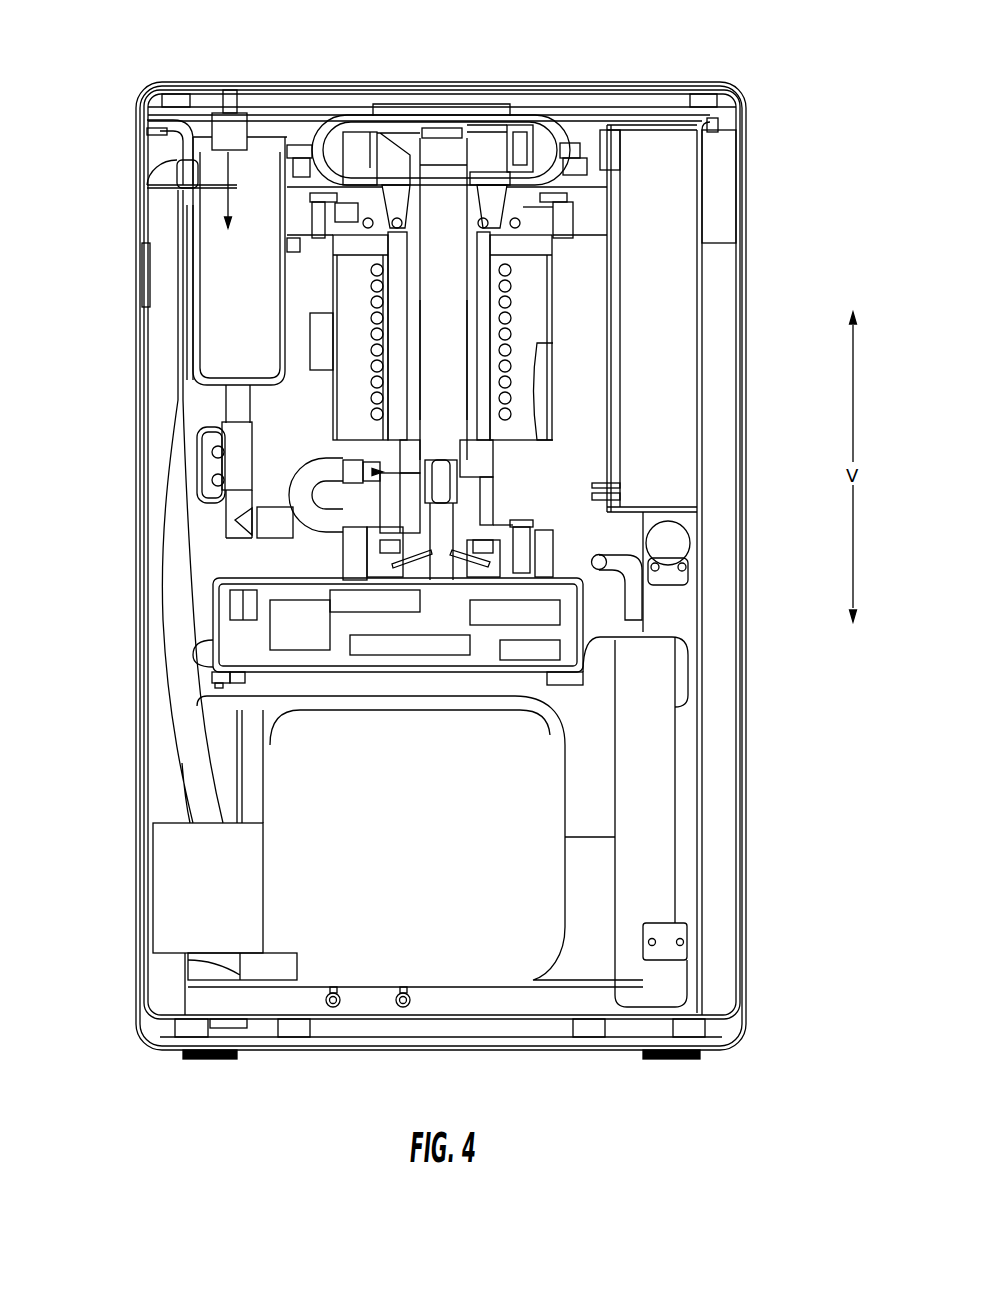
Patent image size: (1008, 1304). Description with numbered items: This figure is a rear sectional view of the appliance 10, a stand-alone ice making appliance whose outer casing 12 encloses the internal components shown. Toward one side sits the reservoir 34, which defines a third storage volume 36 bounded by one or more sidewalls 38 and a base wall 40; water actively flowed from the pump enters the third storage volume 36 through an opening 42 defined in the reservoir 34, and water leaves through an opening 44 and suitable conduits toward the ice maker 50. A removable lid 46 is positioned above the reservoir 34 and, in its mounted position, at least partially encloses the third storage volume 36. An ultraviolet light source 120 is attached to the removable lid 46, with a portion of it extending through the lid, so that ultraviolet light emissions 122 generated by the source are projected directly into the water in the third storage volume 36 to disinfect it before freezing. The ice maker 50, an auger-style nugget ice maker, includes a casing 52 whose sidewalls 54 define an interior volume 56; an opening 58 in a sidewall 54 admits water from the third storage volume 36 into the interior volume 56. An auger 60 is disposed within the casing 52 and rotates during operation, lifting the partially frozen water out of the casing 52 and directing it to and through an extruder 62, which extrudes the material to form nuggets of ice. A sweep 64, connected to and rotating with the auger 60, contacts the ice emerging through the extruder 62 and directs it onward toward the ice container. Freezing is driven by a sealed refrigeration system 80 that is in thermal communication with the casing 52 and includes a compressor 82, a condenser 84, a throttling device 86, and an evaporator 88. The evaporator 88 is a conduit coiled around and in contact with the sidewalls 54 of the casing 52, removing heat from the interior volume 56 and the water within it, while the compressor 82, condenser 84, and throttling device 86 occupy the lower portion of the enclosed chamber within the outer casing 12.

The appliance 10 is at (822, 100).
The outer casing 12 is at (748, 197).
The reservoir 34 is at (178, 273).
The third storage volume 36 is at (270, 212).
The sidewalls 38 is at (190, 247).
The base wall 40 is at (203, 387).
The opening 42 is at (210, 162).
The opening 44 is at (228, 369).
The removable lid 46 is at (251, 120).
The ice maker 50 is at (517, 463).
The casing 52 is at (511, 404).
The sidewalls 54 is at (522, 391).
The interior volume 56 is at (508, 428).
The opening 58 is at (345, 457).
The auger 60 is at (423, 350).
The extruder 62 is at (470, 168).
The sweep 64 is at (522, 155).
The sealed refrigeration system 80 is at (597, 950).
The compressor 82 is at (435, 935).
The condenser 84 is at (662, 807).
The throttling device 86 is at (678, 546).
The evaporator 88 is at (518, 288).
The ultraviolet light source 120 is at (206, 126).
The ultraviolet light emissions 122 is at (230, 185).